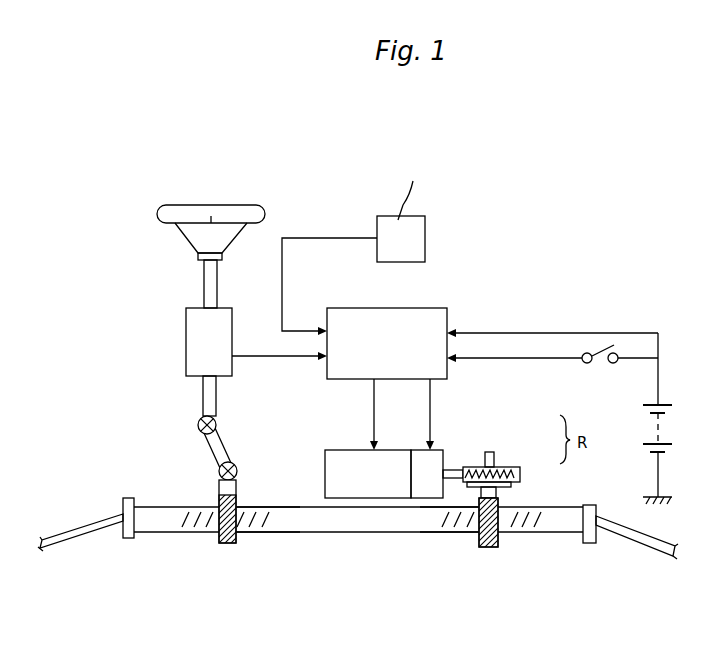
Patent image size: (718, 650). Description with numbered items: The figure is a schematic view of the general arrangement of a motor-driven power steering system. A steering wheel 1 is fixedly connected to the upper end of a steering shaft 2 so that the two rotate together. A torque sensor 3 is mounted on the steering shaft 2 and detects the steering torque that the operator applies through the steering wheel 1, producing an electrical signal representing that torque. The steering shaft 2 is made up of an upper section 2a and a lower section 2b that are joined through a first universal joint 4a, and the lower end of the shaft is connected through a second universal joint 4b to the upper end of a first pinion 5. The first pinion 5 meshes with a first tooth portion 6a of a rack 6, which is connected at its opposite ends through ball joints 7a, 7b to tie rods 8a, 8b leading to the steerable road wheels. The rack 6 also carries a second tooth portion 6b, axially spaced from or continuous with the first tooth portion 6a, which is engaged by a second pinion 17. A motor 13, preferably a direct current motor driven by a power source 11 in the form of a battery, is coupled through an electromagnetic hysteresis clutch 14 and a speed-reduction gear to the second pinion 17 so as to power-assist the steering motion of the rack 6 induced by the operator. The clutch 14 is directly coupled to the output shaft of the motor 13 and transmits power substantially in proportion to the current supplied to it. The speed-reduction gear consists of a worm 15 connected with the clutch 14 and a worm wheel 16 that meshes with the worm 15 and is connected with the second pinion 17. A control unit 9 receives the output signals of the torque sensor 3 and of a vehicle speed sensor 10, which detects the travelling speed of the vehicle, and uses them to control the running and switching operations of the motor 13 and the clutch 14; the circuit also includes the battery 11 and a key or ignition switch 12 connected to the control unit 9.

The steering wheel 1 is at (157, 214).
The steering shaft 2 is at (198, 398).
The upper section 2a is at (204, 287).
The lower section 2b is at (230, 439).
The torque sensor 3 is at (186, 340).
The first universal joint 4a is at (198, 432).
The second universal joint 4b is at (218, 471).
The first pinion 5 is at (225, 543).
The rack 6 is at (353, 535).
The first tooth portion 6a is at (260, 533).
The second tooth portion 6b is at (457, 533).
The ball joint 7a is at (128, 540).
The ball joint 7b is at (586, 545).
The tie rod 8a is at (66, 544).
The tie rod 8b is at (640, 554).
The control unit 9 is at (437, 308).
The vehicle speed sensor 10 is at (426, 236).
The power source 11 is at (672, 432).
The ignition switch 12 is at (594, 366).
The motor 13 is at (338, 450).
The electromagnetic hysteresis clutch 14 is at (443, 454).
The worm 15 is at (520, 470).
The worm wheel 16 is at (501, 468).
The second pinion 17 is at (496, 547).